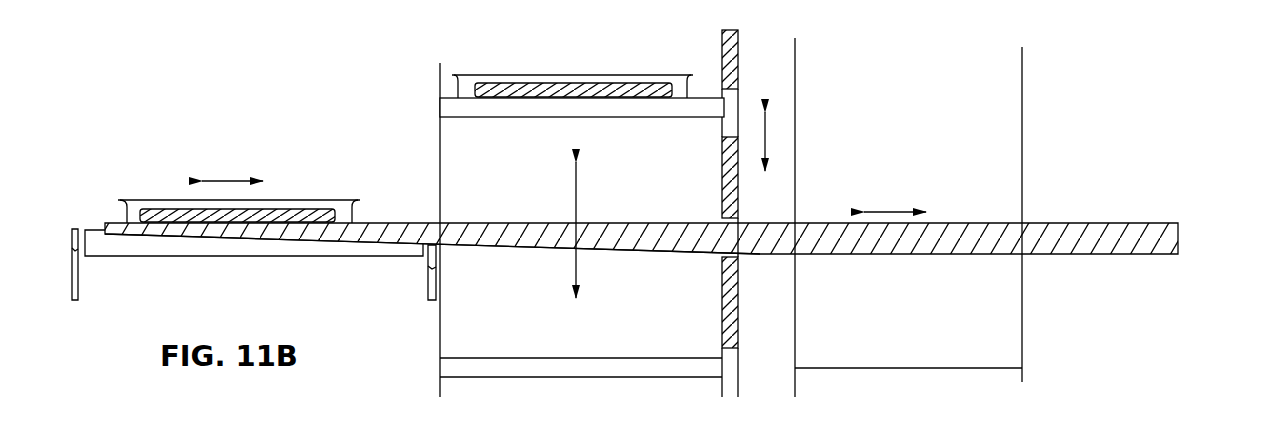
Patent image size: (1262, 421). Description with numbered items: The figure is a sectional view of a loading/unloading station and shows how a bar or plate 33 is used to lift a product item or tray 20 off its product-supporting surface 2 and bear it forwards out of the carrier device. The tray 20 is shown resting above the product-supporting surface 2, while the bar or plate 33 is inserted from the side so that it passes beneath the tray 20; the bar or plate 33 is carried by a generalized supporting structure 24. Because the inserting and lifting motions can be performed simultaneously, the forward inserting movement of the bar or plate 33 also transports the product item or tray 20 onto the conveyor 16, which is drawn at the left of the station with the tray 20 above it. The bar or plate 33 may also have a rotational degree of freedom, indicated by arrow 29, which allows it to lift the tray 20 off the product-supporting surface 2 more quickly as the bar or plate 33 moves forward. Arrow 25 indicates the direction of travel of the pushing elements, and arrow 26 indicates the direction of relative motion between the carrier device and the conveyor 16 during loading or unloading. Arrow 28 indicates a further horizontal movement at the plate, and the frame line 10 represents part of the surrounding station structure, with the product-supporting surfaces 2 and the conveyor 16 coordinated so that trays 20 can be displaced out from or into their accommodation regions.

The product-supporting surface 2 is at (503, 106).
The housing frame 10 is at (1003, 95).
The conveyor 16 is at (131, 243).
The product item or tray 20 is at (293, 216).
The supporting structure 24 is at (1167, 231).
The arrow indicating direction of travel 25 is at (905, 210).
The arrow indicating direction of relative motion 26 is at (770, 137).
The horizontal movement direction of plate 28 is at (230, 178).
The arrow indicating rotational degree of freedom 29 is at (572, 195).
The bar or plate 33 is at (293, 232).